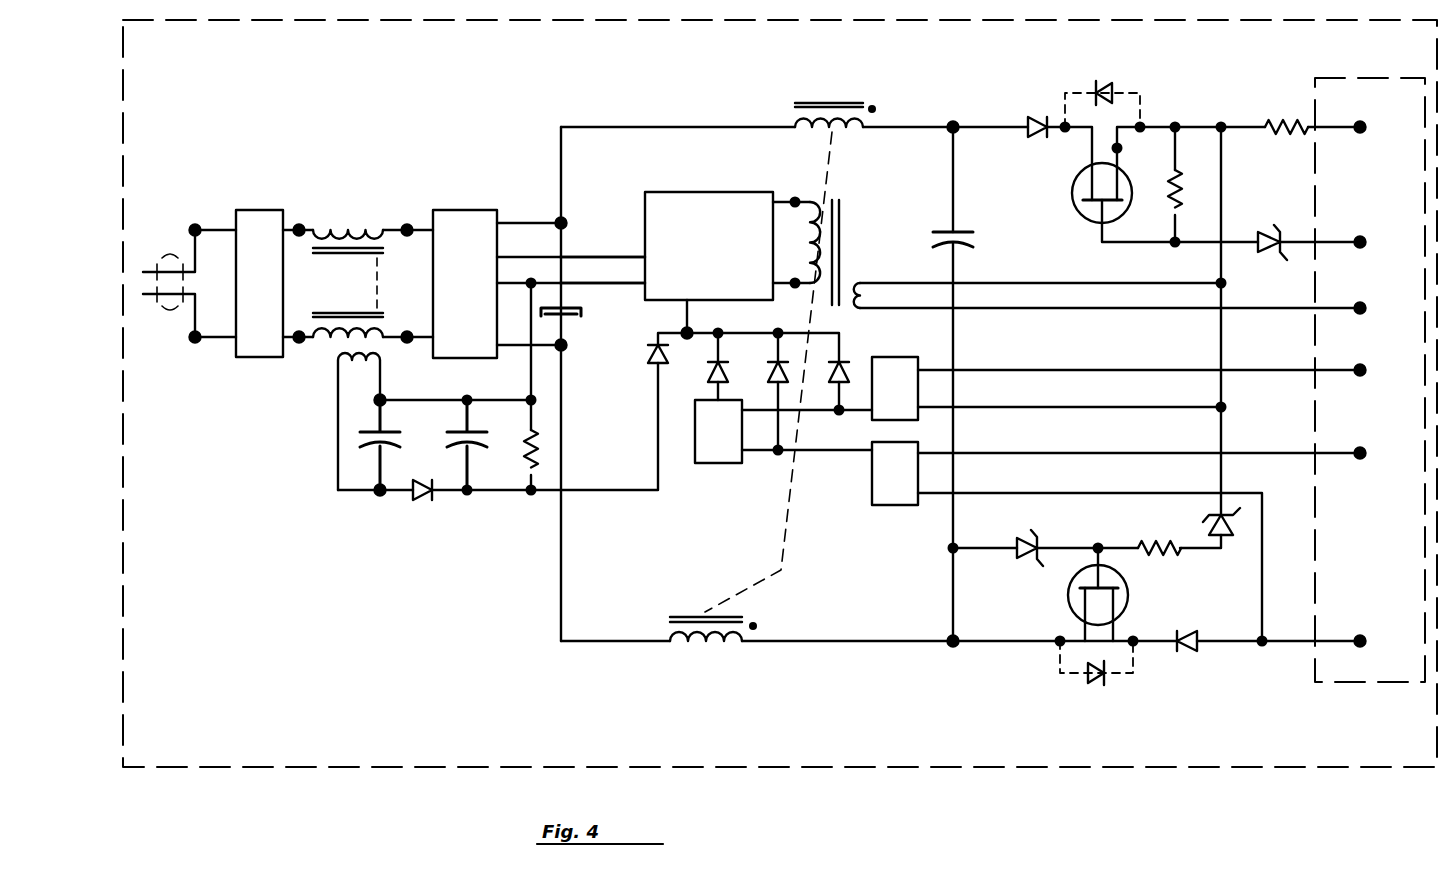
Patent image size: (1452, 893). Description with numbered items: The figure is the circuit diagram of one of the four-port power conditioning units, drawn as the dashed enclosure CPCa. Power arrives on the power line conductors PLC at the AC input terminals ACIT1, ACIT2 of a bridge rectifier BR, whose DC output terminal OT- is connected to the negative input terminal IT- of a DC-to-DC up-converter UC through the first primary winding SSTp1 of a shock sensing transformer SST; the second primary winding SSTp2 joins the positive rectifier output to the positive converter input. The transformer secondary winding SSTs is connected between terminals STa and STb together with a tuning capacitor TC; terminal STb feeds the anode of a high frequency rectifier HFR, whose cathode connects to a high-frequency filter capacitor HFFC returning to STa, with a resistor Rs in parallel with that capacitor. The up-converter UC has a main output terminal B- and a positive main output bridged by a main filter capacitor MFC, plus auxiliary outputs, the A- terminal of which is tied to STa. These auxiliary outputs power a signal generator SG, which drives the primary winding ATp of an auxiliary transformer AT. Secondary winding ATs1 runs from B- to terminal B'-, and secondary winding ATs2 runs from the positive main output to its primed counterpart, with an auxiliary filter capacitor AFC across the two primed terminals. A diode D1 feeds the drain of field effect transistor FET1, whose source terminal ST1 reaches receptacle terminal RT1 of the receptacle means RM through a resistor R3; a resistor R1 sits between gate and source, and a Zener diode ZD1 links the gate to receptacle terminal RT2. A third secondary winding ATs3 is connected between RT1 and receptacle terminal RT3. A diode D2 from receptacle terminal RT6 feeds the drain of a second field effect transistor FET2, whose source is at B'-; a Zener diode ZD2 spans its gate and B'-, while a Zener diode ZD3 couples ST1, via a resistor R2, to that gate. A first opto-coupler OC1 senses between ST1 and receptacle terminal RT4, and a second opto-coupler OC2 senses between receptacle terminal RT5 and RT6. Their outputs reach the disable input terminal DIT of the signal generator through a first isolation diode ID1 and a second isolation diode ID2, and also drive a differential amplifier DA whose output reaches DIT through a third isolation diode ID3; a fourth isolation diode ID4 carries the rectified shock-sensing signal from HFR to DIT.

The charging power circuit CPCa is at (477, 767).
The power line conductors PLC is at (170, 312).
The AC input terminal ACIT1 is at (222, 195).
The AC input terminal ACIT2 is at (198, 345).
The bridge rectifier BR is at (274, 299).
The DC output terminal OT- is at (300, 345).
The shock sensing transformer SST is at (302, 321).
The first primary winding SSTp1 is at (328, 347).
The second primary winding SSTp2 is at (345, 231).
The secondary winding SSTs is at (358, 360).
The negative input terminal IT- is at (408, 330).
The DC-to-DC up-converter UC is at (480, 296).
The main DC output terminal B- is at (563, 350).
The auxiliary DC output terminal A- is at (590, 283).
The main filter capacitor MFC is at (570, 316).
The terminal STa is at (386, 397).
The terminal STb is at (381, 496).
The tuning capacitor TC is at (362, 435).
The high frequency rectifier HFR is at (423, 497).
The high-frequency filter capacitor HFFC is at (485, 449).
The resistor Rs is at (527, 444).
The signal generator SG is at (724, 259).
The disable input terminal DIT is at (692, 331).
The auxiliary transformer AT is at (782, 390).
The primary winding ATp is at (815, 245).
The main secondary winding ATs1 is at (697, 645).
The main secondary winding ATs2 is at (838, 130).
The third secondary winding ATs3 is at (860, 296).
The first isolation diode ID1 is at (847, 384).
The second isolation diode ID2 is at (770, 364).
The third isolation diode ID3 is at (708, 364).
The fourth isolation diode ID4 is at (654, 360).
The differential amplifier DA is at (731, 440).
The first opto-coupler OC1 is at (912, 400).
The second opto-coupler OC2 is at (912, 488).
The terminal B'- is at (937, 663).
The auxiliary filter capacitor AFC is at (958, 230).
The diode D1 is at (1030, 122).
The source terminal ST1 is at (1121, 146).
The field effect transistor FET1 is at (1080, 212).
The resistor R1 is at (1170, 195).
The resistor R3 is at (1282, 120).
The Zener diode ZD1 is at (1262, 240).
The receptacle means RM is at (1291, 410).
The receptacle terminal RT1 is at (1366, 124).
The receptacle terminal RT2 is at (1366, 239).
The receptacle terminal RT3 is at (1366, 305).
The receptacle terminal RT4 is at (1366, 367).
The receptacle terminal RT5 is at (1366, 450).
The receptacle terminal RT6 is at (1384, 626).
The Zener diode ZD2 is at (1015, 546).
The Zener diode ZD3 is at (1205, 530).
The resistor R2 is at (1160, 552).
The field effect transistor FET2 is at (1068, 600).
The diode D2 is at (1188, 635).